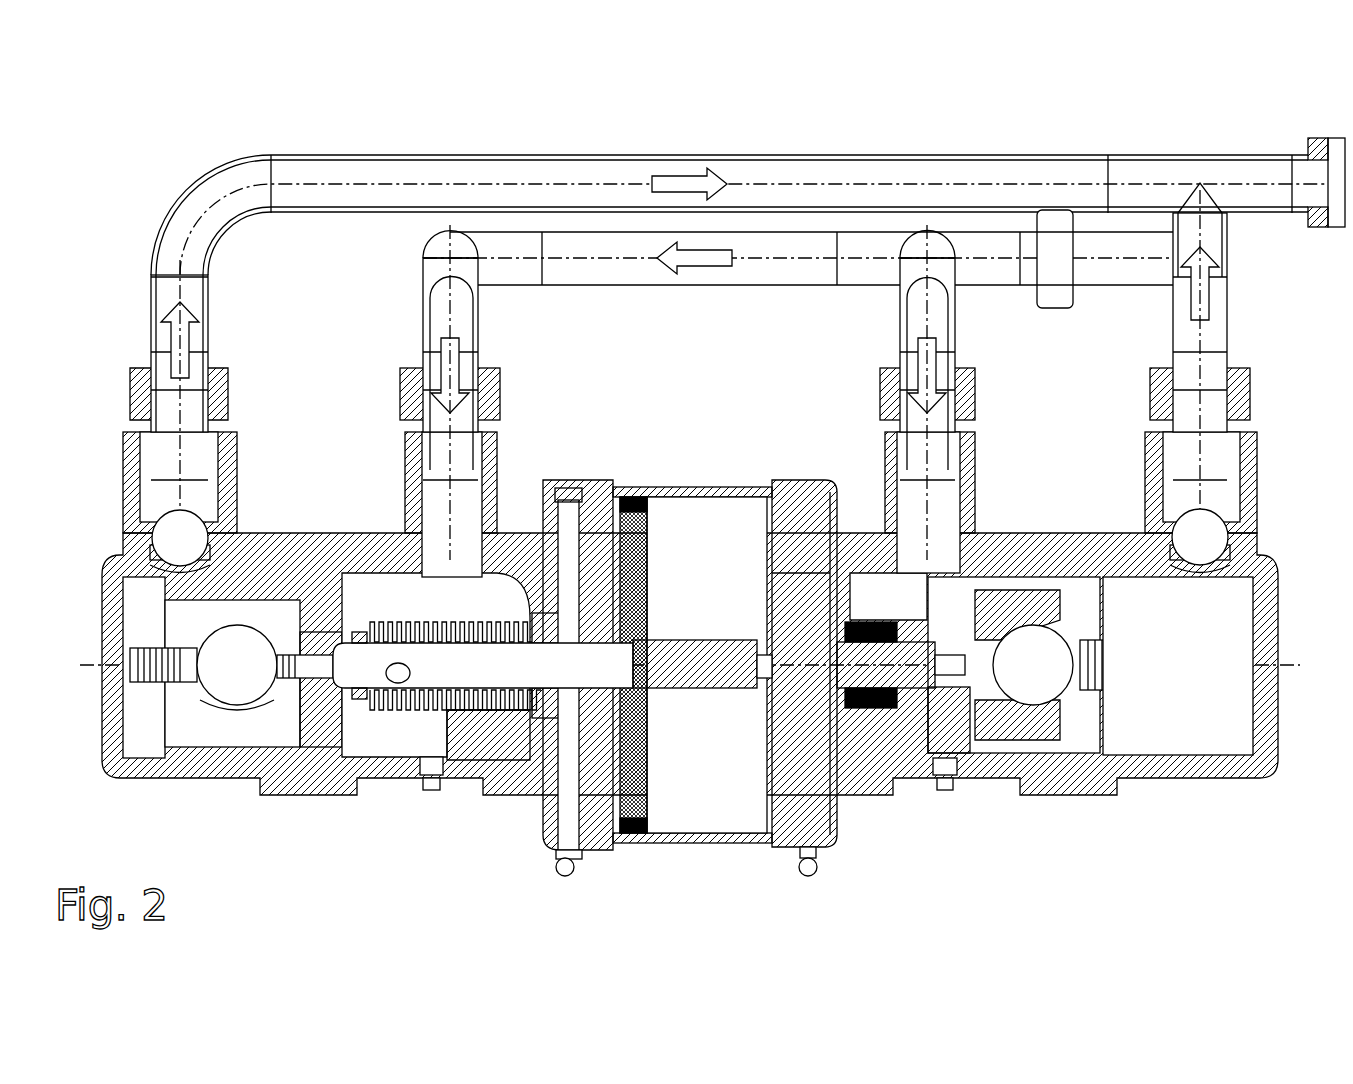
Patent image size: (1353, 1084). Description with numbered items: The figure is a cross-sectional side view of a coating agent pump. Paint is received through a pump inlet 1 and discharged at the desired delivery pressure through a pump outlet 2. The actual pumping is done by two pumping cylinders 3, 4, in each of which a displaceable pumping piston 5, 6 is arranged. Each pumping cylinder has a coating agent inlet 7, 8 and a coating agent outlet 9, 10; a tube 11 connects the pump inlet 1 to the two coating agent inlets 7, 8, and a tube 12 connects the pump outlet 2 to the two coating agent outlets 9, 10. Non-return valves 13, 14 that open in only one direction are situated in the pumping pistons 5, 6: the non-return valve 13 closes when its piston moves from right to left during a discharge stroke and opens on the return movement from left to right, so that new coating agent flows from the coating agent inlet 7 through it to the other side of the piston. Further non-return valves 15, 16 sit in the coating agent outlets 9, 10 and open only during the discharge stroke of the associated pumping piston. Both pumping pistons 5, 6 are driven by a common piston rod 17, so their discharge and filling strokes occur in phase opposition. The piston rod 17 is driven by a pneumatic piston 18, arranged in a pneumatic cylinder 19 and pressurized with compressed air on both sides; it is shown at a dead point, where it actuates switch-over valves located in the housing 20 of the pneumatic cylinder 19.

The pump inlet 1 is at (1052, 303).
The pump outlet 2 is at (1328, 140).
The pumping cylinder 3 is at (145, 778).
The pumping cylinder 4 is at (1212, 770).
The pumping piston 5 is at (970, 735).
The pumping piston 6 is at (320, 720).
The coating agent inlet 7 is at (405, 455).
The coating agent inlet 8 is at (885, 455).
The coating agent outlet 9 is at (128, 458).
The coating agent outlet 10 is at (1250, 455).
The tube 11 is at (565, 270).
The tube 12 is at (403, 172).
The non-return valve 13 is at (223, 688).
The non-return valve 14 is at (1050, 690).
The non-return valve 15 is at (167, 527).
The non-return valve 16 is at (1212, 530).
The piston rod 17 is at (687, 700).
The pneumatic piston 18 is at (648, 812).
The pneumatic cylinder 19 is at (702, 545).
The housing 20 is at (592, 812).